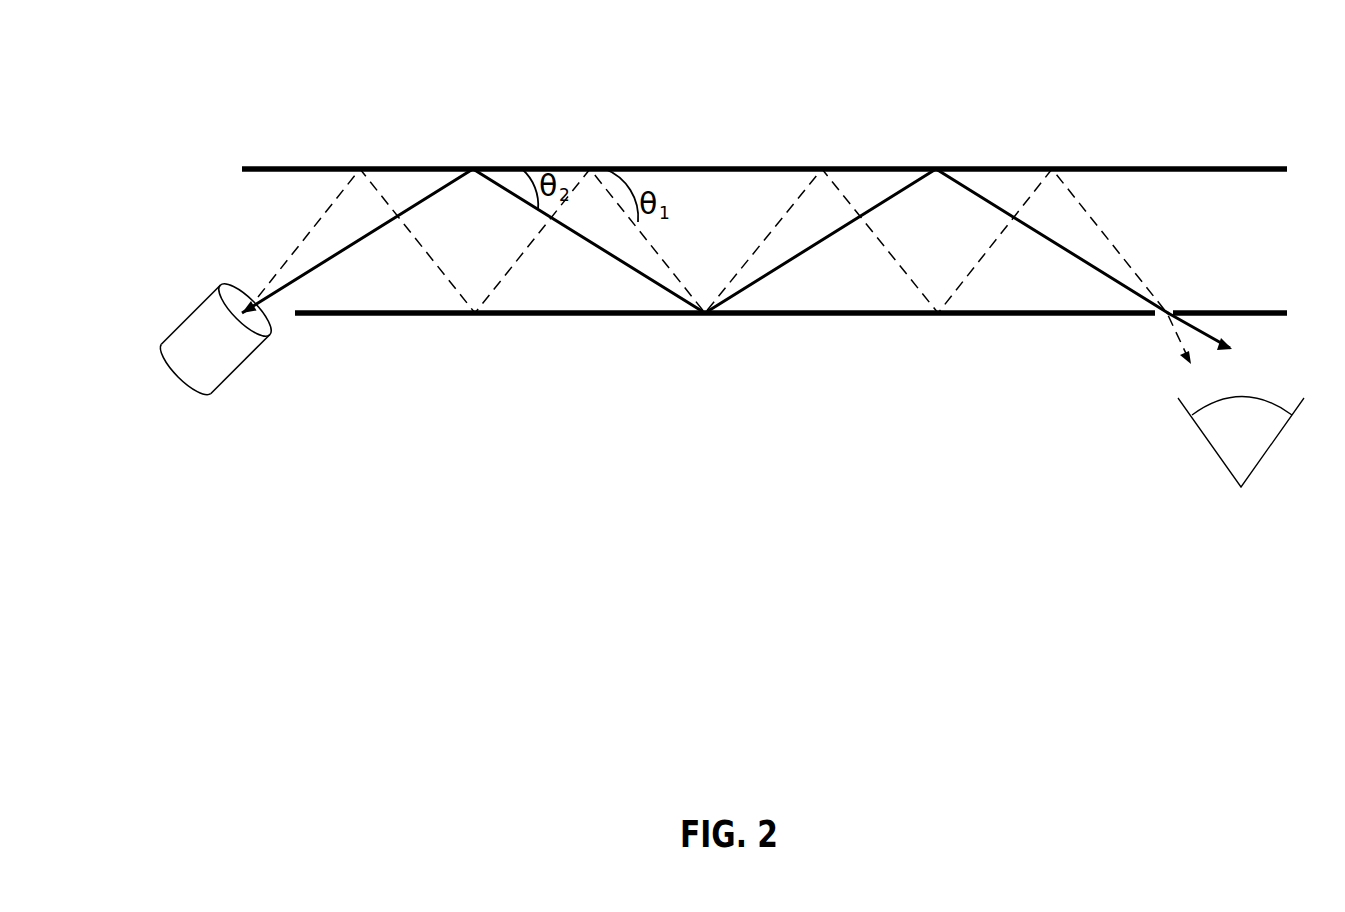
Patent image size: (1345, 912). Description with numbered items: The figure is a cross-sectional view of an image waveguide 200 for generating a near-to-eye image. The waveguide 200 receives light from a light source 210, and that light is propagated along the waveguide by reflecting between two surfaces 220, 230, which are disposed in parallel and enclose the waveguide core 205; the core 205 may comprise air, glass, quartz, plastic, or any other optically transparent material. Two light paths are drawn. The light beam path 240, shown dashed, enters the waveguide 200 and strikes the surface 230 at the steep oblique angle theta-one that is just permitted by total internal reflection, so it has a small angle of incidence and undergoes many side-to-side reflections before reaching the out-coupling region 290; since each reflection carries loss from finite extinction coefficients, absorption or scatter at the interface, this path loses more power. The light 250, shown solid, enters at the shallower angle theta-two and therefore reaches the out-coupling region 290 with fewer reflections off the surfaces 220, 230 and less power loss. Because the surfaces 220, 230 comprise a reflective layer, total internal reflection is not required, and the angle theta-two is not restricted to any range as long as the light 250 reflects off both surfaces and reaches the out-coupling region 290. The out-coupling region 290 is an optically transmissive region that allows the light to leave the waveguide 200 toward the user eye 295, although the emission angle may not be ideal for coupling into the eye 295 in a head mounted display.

The waveguide 200 is at (640, 517).
The waveguide core 205 is at (1150, 200).
The light source 210 is at (225, 353).
The surface 220 is at (990, 310).
The surface 230 is at (971, 166).
The light beam path 240 is at (278, 267).
The light 250 is at (420, 205).
The out-coupling region 290 is at (1168, 313).
The user eye 295 is at (1248, 465).